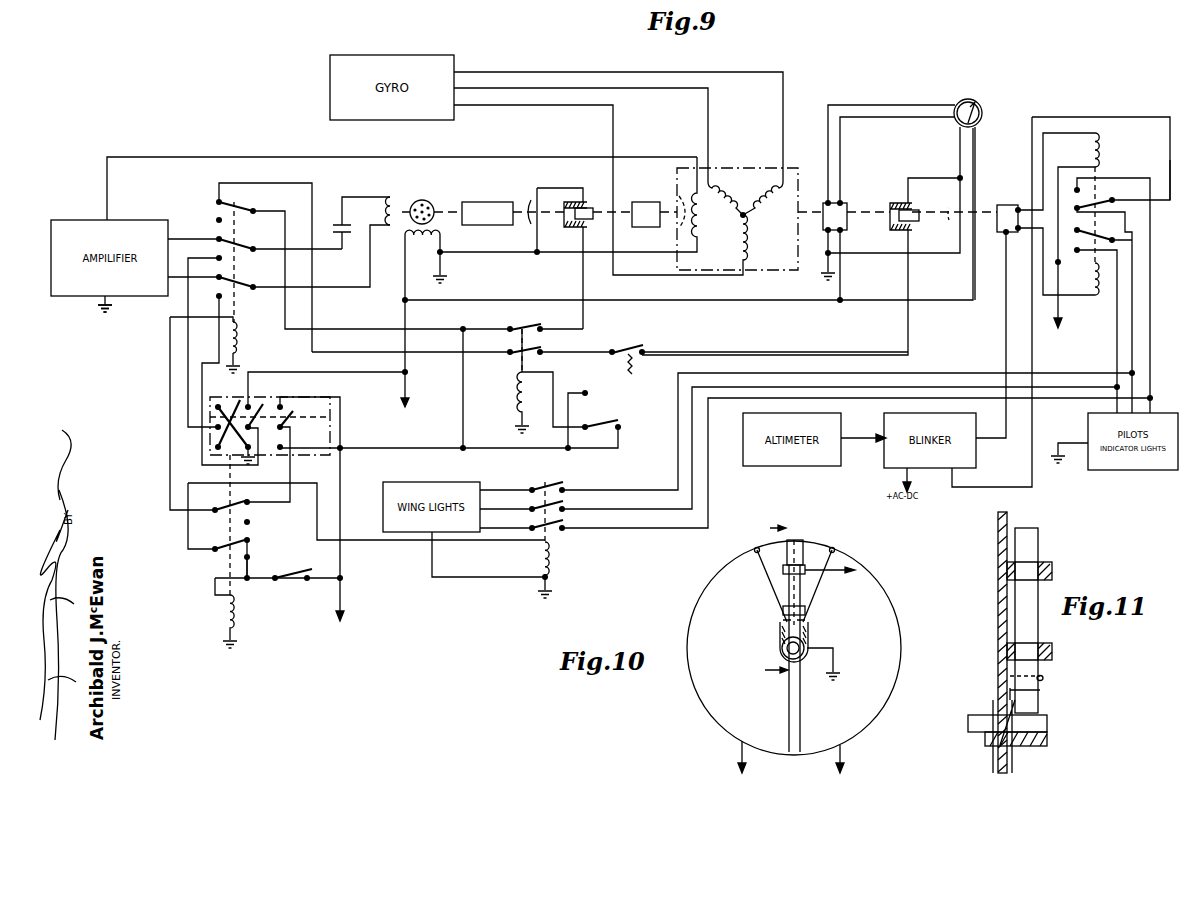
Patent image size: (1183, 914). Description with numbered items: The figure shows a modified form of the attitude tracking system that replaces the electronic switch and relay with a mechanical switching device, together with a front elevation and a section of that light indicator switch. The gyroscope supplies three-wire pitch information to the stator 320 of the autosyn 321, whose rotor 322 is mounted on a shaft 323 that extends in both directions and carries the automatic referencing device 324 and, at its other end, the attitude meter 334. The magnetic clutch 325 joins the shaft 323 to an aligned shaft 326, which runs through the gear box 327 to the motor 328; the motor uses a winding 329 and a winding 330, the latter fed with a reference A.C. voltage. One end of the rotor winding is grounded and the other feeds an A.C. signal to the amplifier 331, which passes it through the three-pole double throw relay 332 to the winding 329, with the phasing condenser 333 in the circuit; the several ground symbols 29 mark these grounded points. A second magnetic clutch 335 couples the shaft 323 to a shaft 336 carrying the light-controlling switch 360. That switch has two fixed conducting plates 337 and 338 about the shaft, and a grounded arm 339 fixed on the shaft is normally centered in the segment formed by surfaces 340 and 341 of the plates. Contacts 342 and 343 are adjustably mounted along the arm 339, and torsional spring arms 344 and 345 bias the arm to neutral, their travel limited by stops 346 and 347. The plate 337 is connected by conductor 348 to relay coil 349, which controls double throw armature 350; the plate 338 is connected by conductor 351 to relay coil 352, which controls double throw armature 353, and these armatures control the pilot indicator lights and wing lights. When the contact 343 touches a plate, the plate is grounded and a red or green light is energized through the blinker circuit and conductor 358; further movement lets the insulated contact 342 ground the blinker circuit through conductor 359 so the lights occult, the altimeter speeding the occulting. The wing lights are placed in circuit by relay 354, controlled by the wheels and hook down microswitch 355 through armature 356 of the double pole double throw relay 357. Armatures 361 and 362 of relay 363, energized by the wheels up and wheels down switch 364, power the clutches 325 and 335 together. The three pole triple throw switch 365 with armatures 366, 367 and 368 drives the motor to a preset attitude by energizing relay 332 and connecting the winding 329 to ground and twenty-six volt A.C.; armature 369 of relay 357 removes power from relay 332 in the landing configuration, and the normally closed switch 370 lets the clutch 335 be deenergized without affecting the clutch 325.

In FIG. 9, the ground 29 is at (446, 279).
In FIG. 9, the stator 320 is at (750, 160).
In FIG. 9, the autosyn 321 is at (784, 252).
In FIG. 9, the rotor 322 is at (704, 226).
In FIG. 9, the shaft 323 is at (678, 196).
In FIG. 9, the automatic referencing device 324 is at (656, 228).
In FIG. 9, the magnetic clutch 325 is at (598, 184).
In FIG. 9, the shaft 326 is at (526, 200).
In FIG. 9, the gear box 327 is at (492, 188).
In FIG. 9, the motor 328 is at (422, 200).
In FIG. 9, the winding 329 is at (402, 200).
In FIG. 9, the winding 330 is at (436, 234).
In FIG. 9, the amplifier 331 is at (143, 220).
In FIG. 9, the three-pole double throw relay 332 is at (240, 316).
In FIG. 9, the phasing condenser 333 is at (347, 204).
In FIG. 9, the meter 334 is at (846, 228).
In FIG. 9, the magnetic clutch 335 is at (892, 198).
In FIG. 9, the shaft 336 is at (950, 226).
In FIG. 10, the shaft 336 is at (782, 652).
In FIG. 10, the conducting plate 337 is at (698, 586).
In FIG. 10, the conducting plate 338 is at (900, 592).
In FIG. 10, the arm 339 is at (804, 536).
In FIG. 11, the arm 339 is at (1038, 536).
In FIG. 10, the surface 340 is at (756, 552).
In FIG. 10, the surface 341 is at (833, 551).
In FIG. 11, the surface 341 is at (1052, 644).
In FIG. 10, the contact 342 is at (783, 572).
In FIG. 11, the contact 342 is at (1052, 562).
In FIG. 10, the contact 343 is at (783, 610).
In FIG. 10, the torsional spring arm 344 is at (778, 637).
In FIG. 10, the torsional spring arm 345 is at (811, 624).
In FIG. 11, the torsional spring arm 345 is at (1040, 680).
In FIG. 10, the stop 346 is at (780, 631).
In FIG. 10, the stop 347 is at (810, 634).
In FIG. 11, the stop 347 is at (1032, 690).
In FIG. 9, the conductor 348 is at (1074, 128).
In FIG. 10, the conductor 348 is at (740, 748).
In FIG. 9, the relay coil 349 is at (1102, 143).
In FIG. 9, the double throw armature 350 is at (1100, 200).
In FIG. 9, the conductor 351 is at (1091, 278).
In FIG. 10, the conductor 351 is at (844, 747).
In FIG. 9, the relay coil 352 is at (1098, 284).
In FIG. 9, the double throw armature 353 is at (1104, 226).
In FIG. 9, the relay 354 is at (552, 555).
In FIG. 9, the wheels and hook down microswitch 355 is at (300, 562).
In FIG. 9, the armature 356 is at (246, 542).
In FIG. 9, the double pole double throw relay 357 is at (222, 610).
In FIG. 9, the conductor 358 is at (1169, 162).
In FIG. 9, the conductor 359 is at (1002, 320).
In FIG. 10, the conductor 359 is at (836, 572).
In FIG. 9, the light-controlling switch 360 is at (1012, 184).
In FIG. 9, the armature 361 is at (518, 326).
In FIG. 9, the armature 362 is at (514, 350).
In FIG. 9, the relay 363 is at (516, 398).
In FIG. 9, the wheels up and wheels down switch 364 is at (608, 418).
In FIG. 9, the three pole triple throw switch 365 is at (274, 458).
In FIG. 9, the armature 366 is at (240, 398).
In FIG. 9, the armature 367 is at (258, 398).
In FIG. 9, the armature 368 is at (292, 414).
In FIG. 9, the armature 369 is at (228, 502).
In FIG. 9, the switch 370 is at (570, 348).